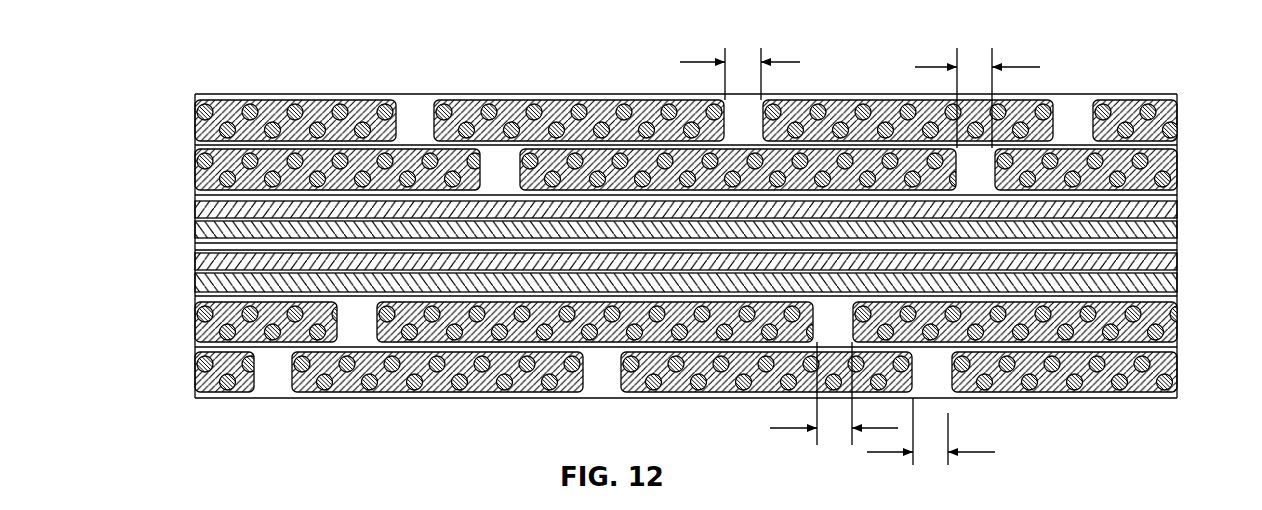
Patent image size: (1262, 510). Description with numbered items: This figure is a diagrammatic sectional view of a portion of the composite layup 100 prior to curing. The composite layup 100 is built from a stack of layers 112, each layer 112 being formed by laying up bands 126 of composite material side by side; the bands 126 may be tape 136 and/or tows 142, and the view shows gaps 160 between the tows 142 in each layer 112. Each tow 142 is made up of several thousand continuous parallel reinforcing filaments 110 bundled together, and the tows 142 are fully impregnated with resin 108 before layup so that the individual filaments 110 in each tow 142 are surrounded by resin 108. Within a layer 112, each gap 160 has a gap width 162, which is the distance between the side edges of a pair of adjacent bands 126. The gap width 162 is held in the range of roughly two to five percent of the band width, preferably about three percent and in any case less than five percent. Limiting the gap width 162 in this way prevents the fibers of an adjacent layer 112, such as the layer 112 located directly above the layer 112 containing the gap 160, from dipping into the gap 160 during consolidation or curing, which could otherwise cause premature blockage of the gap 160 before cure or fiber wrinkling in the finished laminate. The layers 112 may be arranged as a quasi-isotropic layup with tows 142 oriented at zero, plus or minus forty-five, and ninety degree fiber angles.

The composite layup 100 is at (246, 93).
The resin 108 is at (386, 100).
The reinforcing filaments 110 is at (487, 100).
The layer 112 is at (192, 121).
The band 126 is at (1118, 398).
The tape 136 is at (313, 100).
The tow 142 is at (575, 100).
The gap 160 is at (414, 125).
The gap width 162 is at (707, 63).